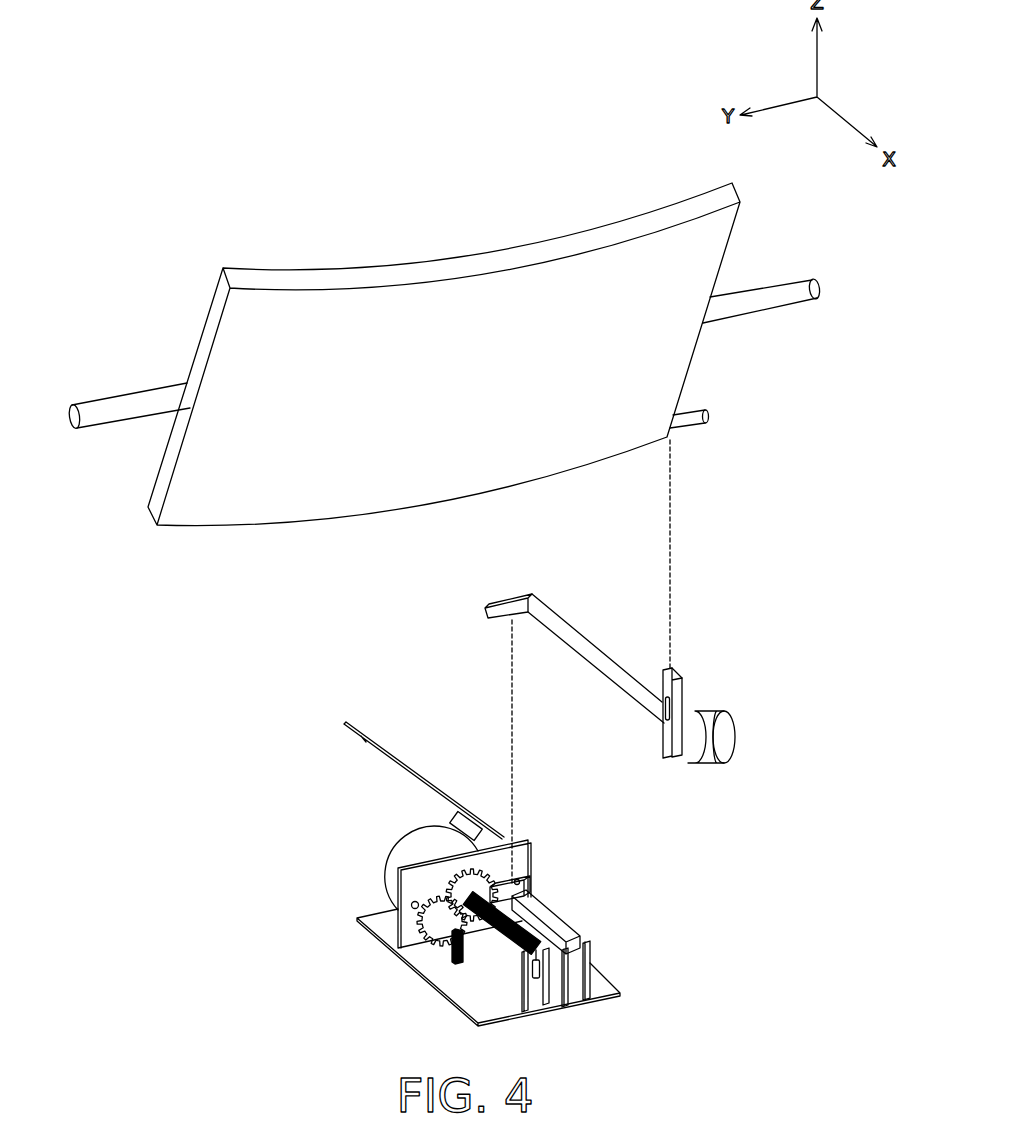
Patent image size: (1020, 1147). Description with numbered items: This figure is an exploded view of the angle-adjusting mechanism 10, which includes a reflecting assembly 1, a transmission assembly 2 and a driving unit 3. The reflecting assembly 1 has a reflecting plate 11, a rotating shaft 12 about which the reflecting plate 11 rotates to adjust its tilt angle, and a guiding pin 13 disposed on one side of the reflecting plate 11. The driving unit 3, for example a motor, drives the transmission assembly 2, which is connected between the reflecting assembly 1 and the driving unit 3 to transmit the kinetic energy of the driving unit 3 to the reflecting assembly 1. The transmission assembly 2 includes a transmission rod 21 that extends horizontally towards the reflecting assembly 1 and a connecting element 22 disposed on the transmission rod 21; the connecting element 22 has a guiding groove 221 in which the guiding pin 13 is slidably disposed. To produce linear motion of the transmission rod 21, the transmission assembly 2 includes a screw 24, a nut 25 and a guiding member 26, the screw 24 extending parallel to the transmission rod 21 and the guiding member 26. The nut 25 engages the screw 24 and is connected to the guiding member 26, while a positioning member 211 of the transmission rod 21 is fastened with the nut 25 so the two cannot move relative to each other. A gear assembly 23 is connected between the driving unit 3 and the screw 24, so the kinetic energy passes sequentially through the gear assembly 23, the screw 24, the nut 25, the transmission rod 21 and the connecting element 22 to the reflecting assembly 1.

The angle-adjusting mechanism 10 is at (78, 140).
The reflecting assembly 1 is at (858, 201).
The reflecting plate 11 is at (705, 236).
The rotating shaft 12 is at (804, 293).
The guiding pin 13 is at (707, 410).
The transmission assembly 2 is at (707, 863).
The transmission rod 21 is at (595, 655).
The positioning member 211 is at (507, 597).
The connecting element 22 is at (668, 740).
The guiding groove 221 is at (692, 656).
The gear assembly 23 is at (437, 948).
The screw 24 is at (500, 930).
The nut 25 is at (505, 882).
The guiding member 26 is at (552, 920).
The driving unit 3 is at (415, 847).